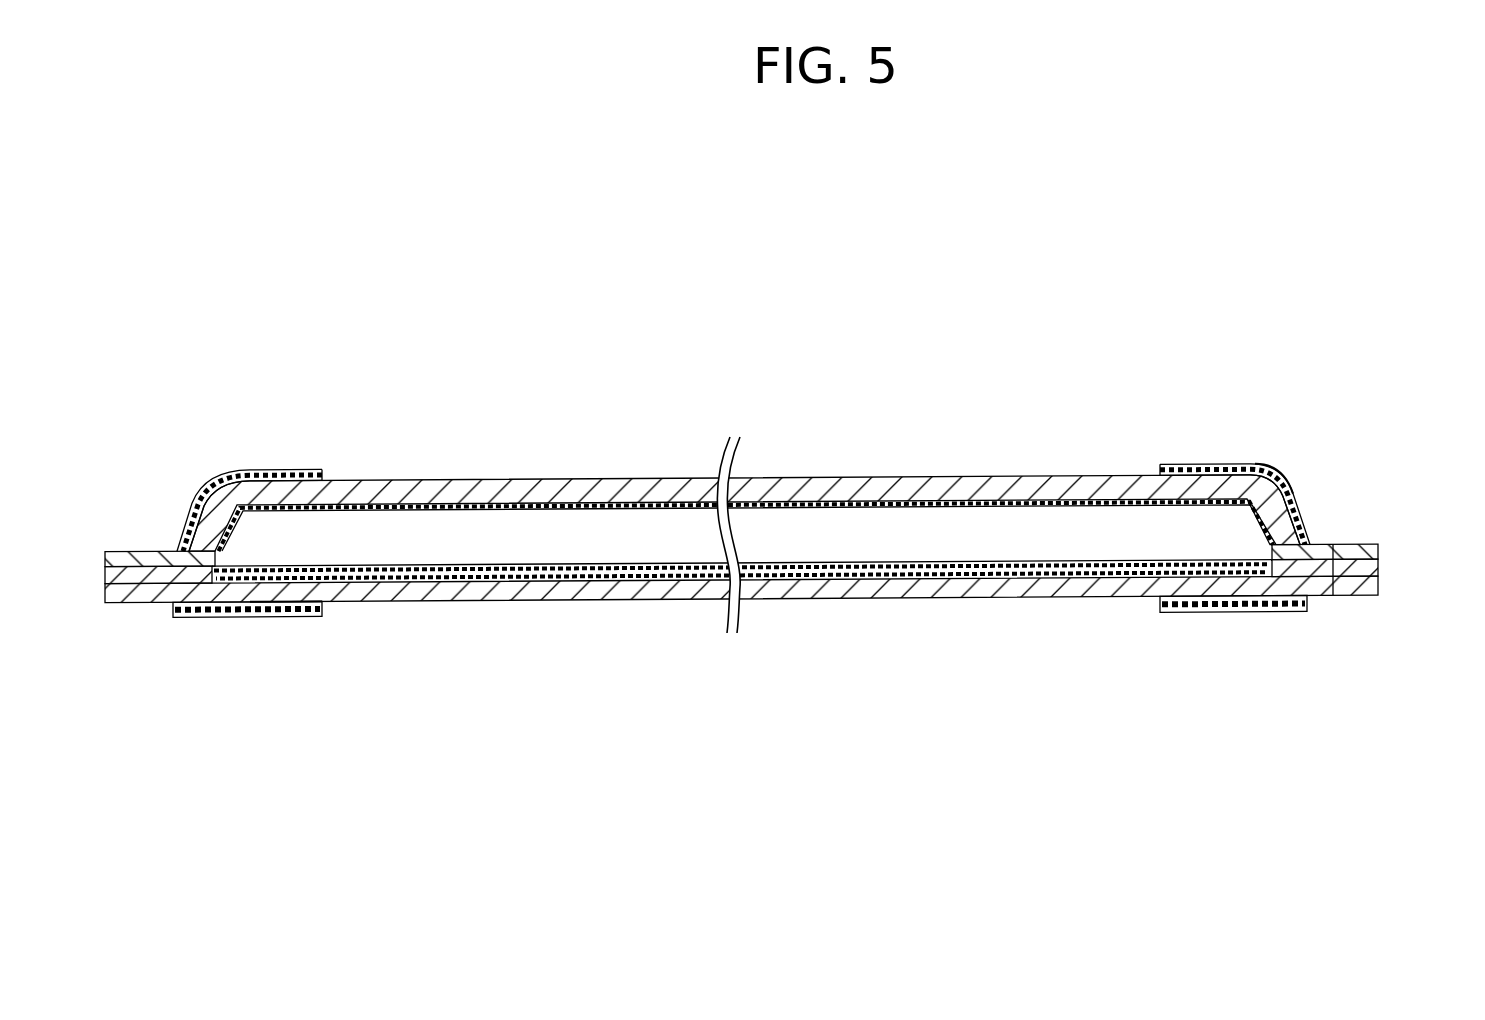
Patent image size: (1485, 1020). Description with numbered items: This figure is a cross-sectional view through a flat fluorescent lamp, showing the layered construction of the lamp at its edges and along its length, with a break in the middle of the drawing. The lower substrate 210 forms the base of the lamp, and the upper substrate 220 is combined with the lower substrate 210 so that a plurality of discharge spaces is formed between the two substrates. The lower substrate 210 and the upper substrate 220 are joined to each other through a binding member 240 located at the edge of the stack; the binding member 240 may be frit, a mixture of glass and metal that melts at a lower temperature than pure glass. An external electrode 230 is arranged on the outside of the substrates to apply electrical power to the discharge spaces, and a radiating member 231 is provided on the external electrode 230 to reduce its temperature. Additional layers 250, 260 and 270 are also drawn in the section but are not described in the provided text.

The lower substrate 210 is at (1380, 584).
The upper substrate 220 is at (1380, 548).
The external electrode 230 is at (1200, 462).
The radiating member 231 is at (1265, 466).
The binding member 240 is at (1333, 595).
The first electrode layer 250 is at (1170, 570).
The encapsulation cover 260 is at (1050, 496).
The second electrode layer 270 is at (1224, 577).